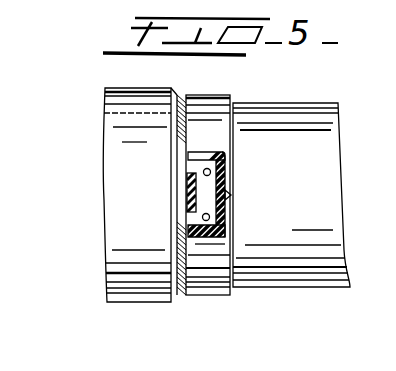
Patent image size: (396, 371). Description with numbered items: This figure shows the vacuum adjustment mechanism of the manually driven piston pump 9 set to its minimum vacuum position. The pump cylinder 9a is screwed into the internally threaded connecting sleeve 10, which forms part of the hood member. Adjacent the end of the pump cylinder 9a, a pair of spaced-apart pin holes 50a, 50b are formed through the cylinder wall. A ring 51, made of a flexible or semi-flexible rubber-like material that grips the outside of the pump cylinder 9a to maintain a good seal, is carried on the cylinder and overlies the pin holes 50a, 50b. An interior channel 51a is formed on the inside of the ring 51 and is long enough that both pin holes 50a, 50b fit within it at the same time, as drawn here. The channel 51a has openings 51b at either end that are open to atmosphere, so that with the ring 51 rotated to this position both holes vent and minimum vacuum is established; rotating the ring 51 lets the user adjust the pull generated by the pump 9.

The piston pump 9 is at (297, 170).
The pump cylinder 9a is at (262, 103).
The connecting sleeve 10 is at (117, 87).
The pin hole 50a is at (210, 217).
The pin hole 50b is at (207, 168).
The ring 51 is at (201, 296).
The interior channel 51a is at (200, 195).
The openings 51b is at (190, 164).